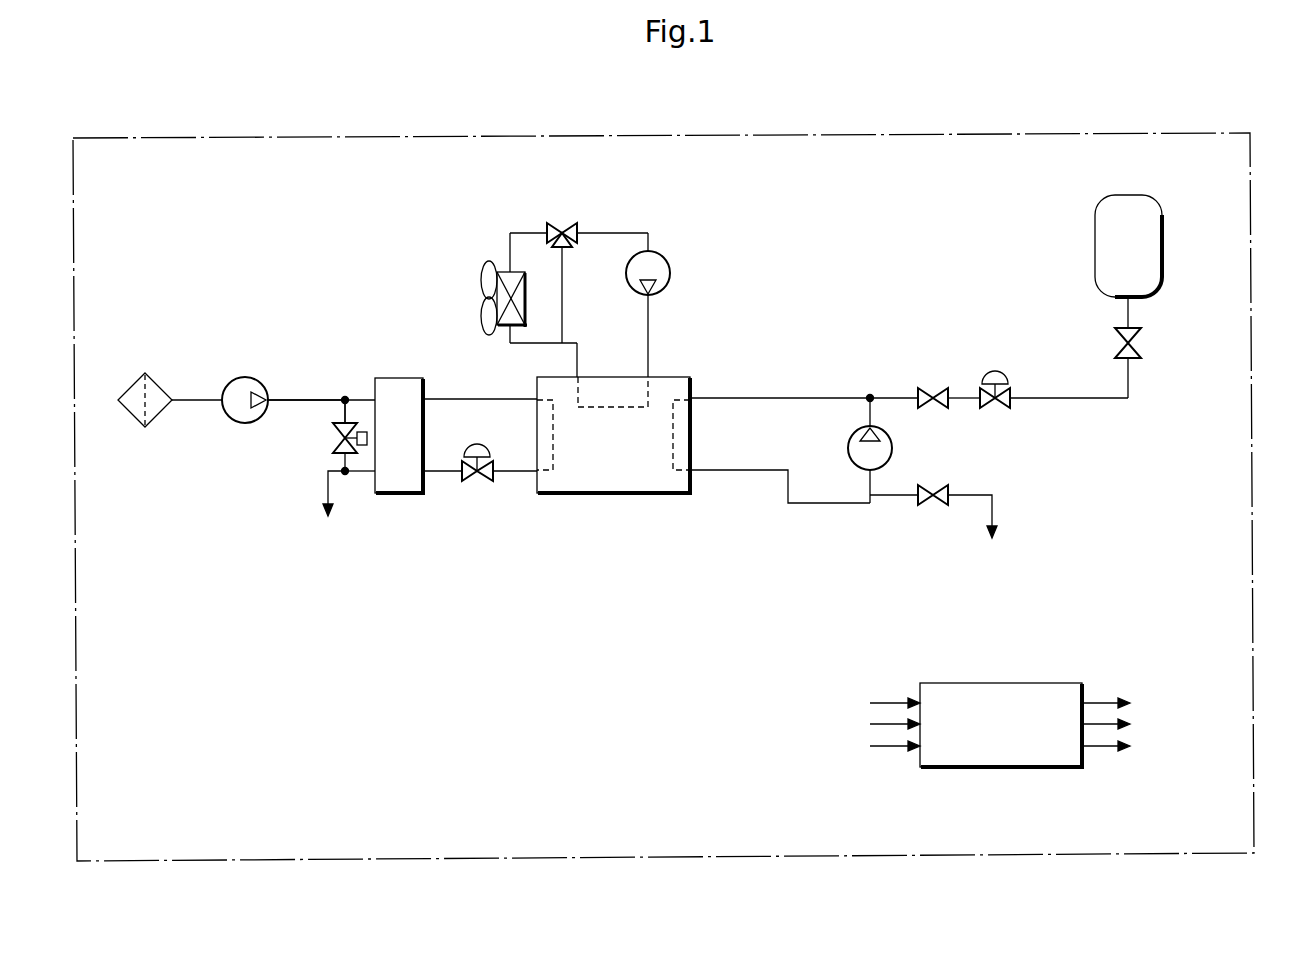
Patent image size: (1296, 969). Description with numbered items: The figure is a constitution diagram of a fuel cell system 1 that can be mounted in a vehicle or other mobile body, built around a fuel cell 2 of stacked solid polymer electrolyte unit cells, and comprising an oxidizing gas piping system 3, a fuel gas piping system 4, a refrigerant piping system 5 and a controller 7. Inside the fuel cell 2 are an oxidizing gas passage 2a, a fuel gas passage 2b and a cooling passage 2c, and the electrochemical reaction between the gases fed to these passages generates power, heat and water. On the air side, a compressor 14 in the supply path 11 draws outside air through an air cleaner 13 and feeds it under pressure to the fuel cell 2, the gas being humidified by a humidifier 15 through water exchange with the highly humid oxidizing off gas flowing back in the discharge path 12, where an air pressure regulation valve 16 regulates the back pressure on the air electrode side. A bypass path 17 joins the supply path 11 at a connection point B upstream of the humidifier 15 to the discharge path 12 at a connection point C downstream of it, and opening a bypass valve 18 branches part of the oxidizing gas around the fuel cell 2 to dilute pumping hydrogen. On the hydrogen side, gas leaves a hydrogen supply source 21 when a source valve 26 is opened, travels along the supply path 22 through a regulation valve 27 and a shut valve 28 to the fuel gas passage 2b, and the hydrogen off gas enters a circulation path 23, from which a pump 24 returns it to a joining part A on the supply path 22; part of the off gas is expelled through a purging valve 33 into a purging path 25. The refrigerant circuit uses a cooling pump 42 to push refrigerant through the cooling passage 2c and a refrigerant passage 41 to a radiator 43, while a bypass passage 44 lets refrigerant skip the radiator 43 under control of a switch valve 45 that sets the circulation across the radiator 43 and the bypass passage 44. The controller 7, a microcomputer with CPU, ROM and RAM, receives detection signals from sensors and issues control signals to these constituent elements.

The fuel cell system 1 is at (1295, 162).
The fuel cell 2 is at (545, 495).
The oxidizing gas passage 2a is at (557, 450).
The fuel gas passage 2b is at (672, 423).
The cooling passage 2c is at (605, 408).
The oxidizing gas piping system 3 is at (311, 385).
The fuel gas piping system 4 is at (1025, 353).
The refrigerant piping system 5 is at (496, 234).
The controller 7 is at (975, 769).
The supply path 11 is at (461, 397).
The discharge path 12 is at (510, 474).
The air cleaner 13 is at (160, 385).
The compressor 14 is at (241, 377).
The humidifier 15 is at (401, 495).
The air pressure regulation valve 16 is at (471, 485).
The bypass path 17 is at (341, 416).
The bypass valve 18 is at (336, 450).
The hydrogen supply source 21 is at (1163, 243).
The supply path 22 is at (1130, 373).
The circulation path 23 is at (840, 505).
The pump 24 is at (849, 445).
The purging path 25 is at (994, 495).
The source valve 26 is at (1141, 336).
The regulation valve 27 is at (1011, 392).
The shut valve 28 is at (920, 387).
The purging valve 33 is at (935, 508).
The refrigerant passage 41 is at (620, 232).
The cooling pump 42 is at (665, 253).
The radiator 43 is at (482, 292).
The bypass passage 44 is at (564, 293).
The switch valve 45 is at (552, 227).
The joining part A is at (870, 395).
The connection point B is at (346, 396).
The connection point C is at (345, 476).